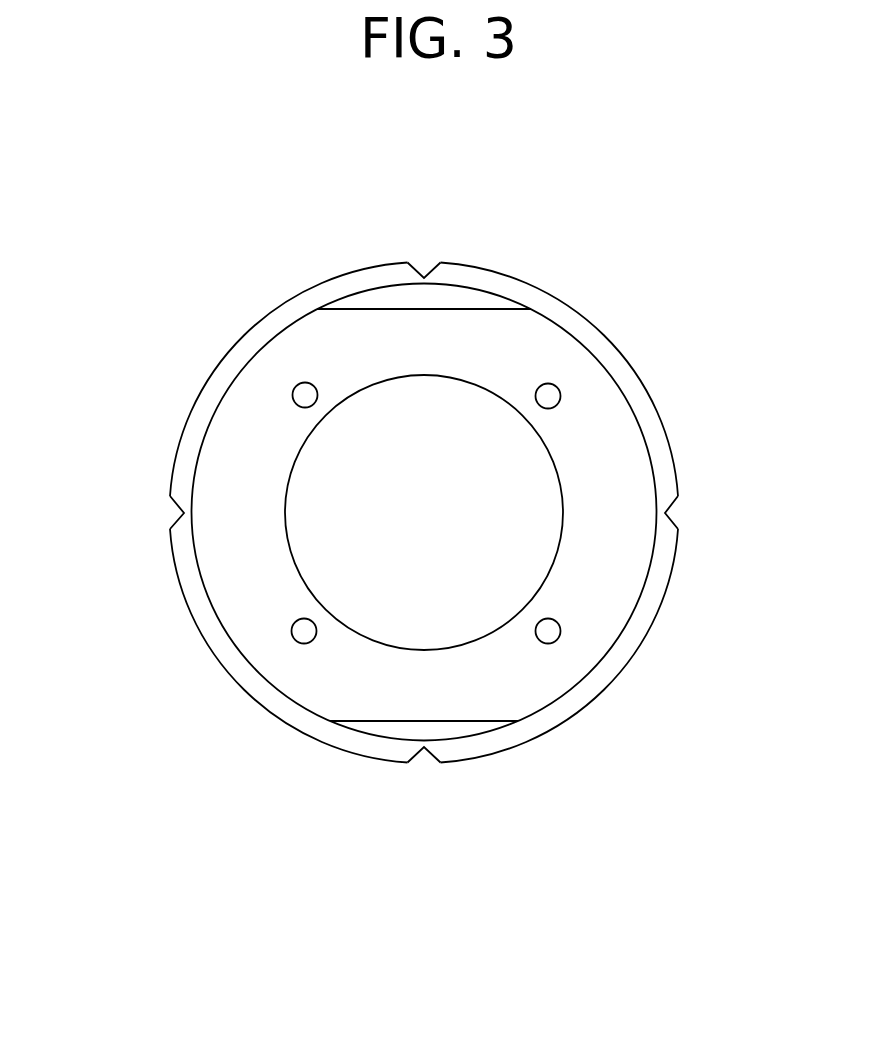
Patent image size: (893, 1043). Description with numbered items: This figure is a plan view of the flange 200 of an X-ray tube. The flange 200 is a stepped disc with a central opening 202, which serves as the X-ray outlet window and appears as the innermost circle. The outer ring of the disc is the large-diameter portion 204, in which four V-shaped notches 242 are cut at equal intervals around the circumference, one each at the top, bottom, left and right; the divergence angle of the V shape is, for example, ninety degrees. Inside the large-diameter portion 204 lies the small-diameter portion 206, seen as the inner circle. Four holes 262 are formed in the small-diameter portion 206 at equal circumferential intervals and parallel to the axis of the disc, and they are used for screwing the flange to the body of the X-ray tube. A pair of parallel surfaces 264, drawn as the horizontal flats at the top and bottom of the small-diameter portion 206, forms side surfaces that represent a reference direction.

The flange 200 is at (448, 163).
The central opening 202 is at (368, 418).
The large-diameter portion 204 is at (363, 264).
The small-diameter portion 206 is at (563, 330).
The notches 242 is at (427, 268).
The holes 262 is at (295, 392).
The parallel surfaces 264 is at (463, 308).